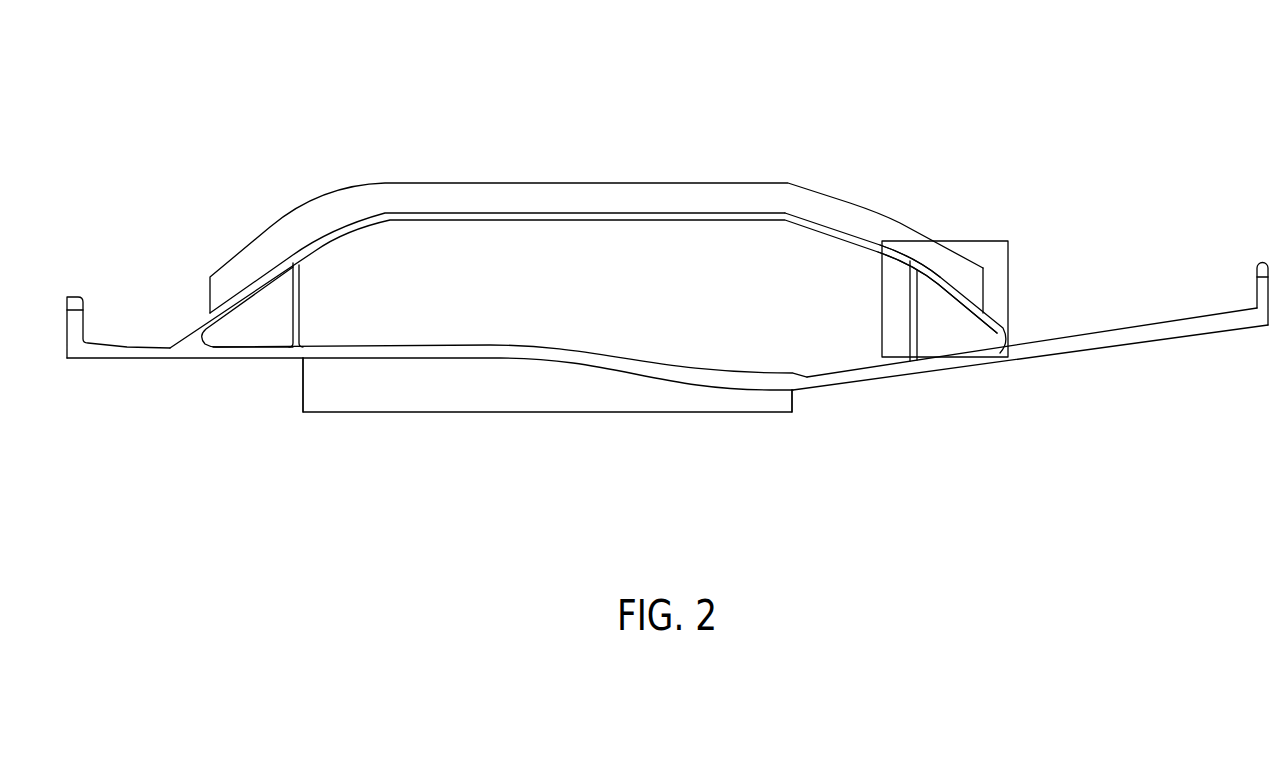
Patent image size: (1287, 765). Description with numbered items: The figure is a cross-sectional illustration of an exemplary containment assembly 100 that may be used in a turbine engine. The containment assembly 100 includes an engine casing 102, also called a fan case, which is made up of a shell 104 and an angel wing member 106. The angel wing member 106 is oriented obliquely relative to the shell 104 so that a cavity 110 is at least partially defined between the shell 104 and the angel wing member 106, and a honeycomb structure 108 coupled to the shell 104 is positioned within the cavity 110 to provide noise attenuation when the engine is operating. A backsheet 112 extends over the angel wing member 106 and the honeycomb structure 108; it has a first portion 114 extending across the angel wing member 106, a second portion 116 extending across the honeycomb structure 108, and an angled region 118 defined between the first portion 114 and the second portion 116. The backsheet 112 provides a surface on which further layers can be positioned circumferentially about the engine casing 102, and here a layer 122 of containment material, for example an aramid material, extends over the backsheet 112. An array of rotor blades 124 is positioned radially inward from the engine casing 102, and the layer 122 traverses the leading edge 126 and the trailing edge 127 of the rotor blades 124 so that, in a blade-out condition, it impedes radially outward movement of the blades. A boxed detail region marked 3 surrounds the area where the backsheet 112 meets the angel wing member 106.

The containment assembly 100 is at (992, 114).
The engine casing 102 is at (1131, 298).
The shell 104 is at (970, 354).
The angel wing member 106 is at (963, 320).
The honeycomb structure 108 is at (637, 303).
The cavity 110 is at (932, 345).
The backsheet 112 is at (958, 291).
The first portion 114 is at (983, 268).
The second portion 116 is at (868, 228).
The angled region 118 is at (920, 260).
The layer of containment material 122 is at (813, 188).
The array of rotor blades 124 is at (287, 401).
The leading edge 126 is at (301, 412).
The trailing edge 127 is at (793, 398).
The detail region of FIG. 3 is at (1010, 313).